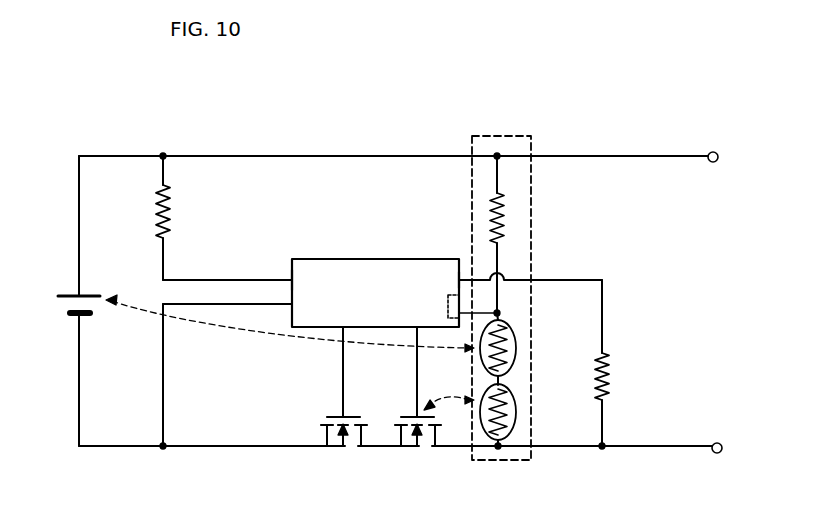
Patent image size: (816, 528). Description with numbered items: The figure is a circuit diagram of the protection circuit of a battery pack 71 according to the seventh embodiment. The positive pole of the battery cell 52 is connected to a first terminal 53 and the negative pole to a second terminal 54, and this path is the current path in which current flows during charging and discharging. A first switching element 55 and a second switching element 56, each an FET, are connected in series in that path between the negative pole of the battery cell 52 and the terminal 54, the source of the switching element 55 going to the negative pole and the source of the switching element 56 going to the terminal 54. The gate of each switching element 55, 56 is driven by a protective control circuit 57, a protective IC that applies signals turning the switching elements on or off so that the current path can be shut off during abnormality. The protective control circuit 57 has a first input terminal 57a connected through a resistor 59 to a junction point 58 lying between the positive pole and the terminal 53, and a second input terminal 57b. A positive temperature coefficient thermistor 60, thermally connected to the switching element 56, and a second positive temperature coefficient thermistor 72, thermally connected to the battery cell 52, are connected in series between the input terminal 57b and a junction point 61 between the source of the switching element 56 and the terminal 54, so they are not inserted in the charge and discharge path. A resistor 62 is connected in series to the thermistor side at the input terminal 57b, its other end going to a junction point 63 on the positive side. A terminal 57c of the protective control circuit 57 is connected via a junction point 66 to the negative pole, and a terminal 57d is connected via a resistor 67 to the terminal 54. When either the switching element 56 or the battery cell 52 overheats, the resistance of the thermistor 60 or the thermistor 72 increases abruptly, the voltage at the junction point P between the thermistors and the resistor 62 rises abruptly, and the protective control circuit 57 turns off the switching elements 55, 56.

The battery pack 71 is at (160, 107).
The junction point 58 is at (164, 155).
The resistor 59 is at (172, 216).
The battery cell 52 is at (72, 293).
The junction point 66 is at (164, 448).
The protective control circuit 57 is at (373, 259).
The first input terminal 57a is at (290, 279).
The second input terminal 57b is at (448, 300).
The terminal 57c is at (290, 305).
The terminal 57d is at (462, 278).
The junction point 63 is at (499, 155).
The resistor 62 is at (503, 200).
The junction point P is at (500, 311).
The first terminal 53 is at (716, 152).
The second terminal 54 is at (718, 454).
The resistor 67 is at (612, 363).
The second positive temperature coefficient thermistor 72 is at (515, 345).
The positive temperature coefficient thermistor 60 is at (515, 412).
The junction point 61 is at (500, 450).
The first switching element 55 is at (338, 413).
The second switching element 56 is at (410, 413).